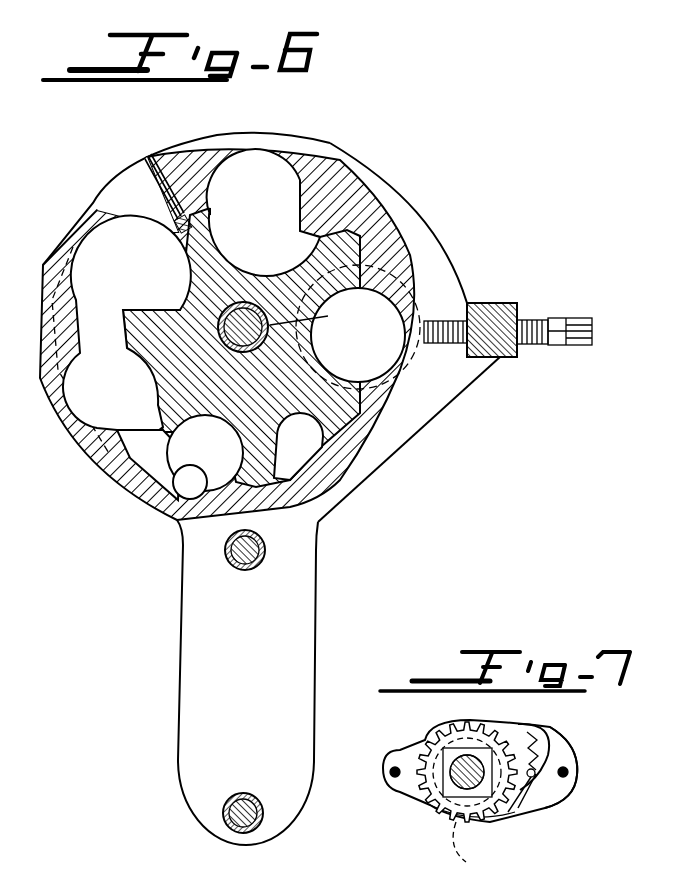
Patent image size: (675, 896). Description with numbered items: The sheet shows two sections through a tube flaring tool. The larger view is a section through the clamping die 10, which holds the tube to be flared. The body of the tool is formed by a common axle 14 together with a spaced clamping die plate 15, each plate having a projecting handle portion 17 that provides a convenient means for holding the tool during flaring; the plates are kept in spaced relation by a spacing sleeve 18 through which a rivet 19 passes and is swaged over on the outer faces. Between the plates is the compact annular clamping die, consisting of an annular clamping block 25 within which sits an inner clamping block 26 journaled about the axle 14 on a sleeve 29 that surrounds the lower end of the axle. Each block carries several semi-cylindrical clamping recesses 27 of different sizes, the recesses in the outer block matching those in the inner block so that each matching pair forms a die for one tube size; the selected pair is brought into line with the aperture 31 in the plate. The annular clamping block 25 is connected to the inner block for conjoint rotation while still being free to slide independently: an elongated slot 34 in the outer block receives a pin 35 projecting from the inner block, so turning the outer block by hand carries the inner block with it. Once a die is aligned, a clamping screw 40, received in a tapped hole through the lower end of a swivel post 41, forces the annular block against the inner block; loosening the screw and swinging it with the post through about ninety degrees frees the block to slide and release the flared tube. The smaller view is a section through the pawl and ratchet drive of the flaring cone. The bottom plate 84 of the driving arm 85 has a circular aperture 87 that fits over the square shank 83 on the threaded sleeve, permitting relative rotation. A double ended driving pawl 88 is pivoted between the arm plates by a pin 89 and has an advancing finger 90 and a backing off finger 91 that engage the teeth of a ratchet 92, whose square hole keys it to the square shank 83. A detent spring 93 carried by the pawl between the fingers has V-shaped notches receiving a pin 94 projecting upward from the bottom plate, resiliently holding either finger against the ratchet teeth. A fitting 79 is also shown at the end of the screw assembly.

In FIG. 6, the clamping die 10 is at (73, 483).
In FIG. 6, the axle 14 is at (250, 316).
In FIG. 6, the clamping die plate 15 is at (398, 428).
In FIG. 6, the handle portion 17 is at (297, 622).
In FIG. 6, the spacing sleeve 18 is at (246, 796).
In FIG. 6, the rivet 19 is at (256, 797).
In FIG. 6, the annular clamping block 25 is at (330, 196).
In FIG. 6, the inner clamping block 26 is at (203, 261).
In FIG. 6, the clamping recess 27 is at (270, 157).
In FIG. 6, the sleeve 29 is at (316, 317).
In FIG. 6, the aperture 31 is at (387, 272).
In FIG. 6, the elongated slot 34 is at (127, 197).
In FIG. 6, the pin 35 is at (149, 160).
In FIG. 6, the clamping screw 40 is at (455, 318).
In FIG. 6, the swivel post 41 is at (500, 310).
In FIG. 6, the fitting 79 is at (585, 325).
In FIG. 7, the square shank 83 is at (444, 790).
In FIG. 7, the bottom plate 84 is at (502, 812).
In FIG. 7, the driving arm 85 is at (603, 757).
In FIG. 7, the circular aperture 87 is at (469, 818).
In FIG. 7, the driving pawl 88 is at (556, 798).
In FIG. 7, the pin 89 is at (575, 771).
In FIG. 7, the advancing finger 90 is at (515, 808).
In FIG. 7, the backing off finger 91 is at (522, 726).
In FIG. 7, the ratchet 92 is at (437, 740).
In FIG. 7, the detent spring 93 is at (525, 742).
In FIG. 7, the pin 94 is at (536, 771).